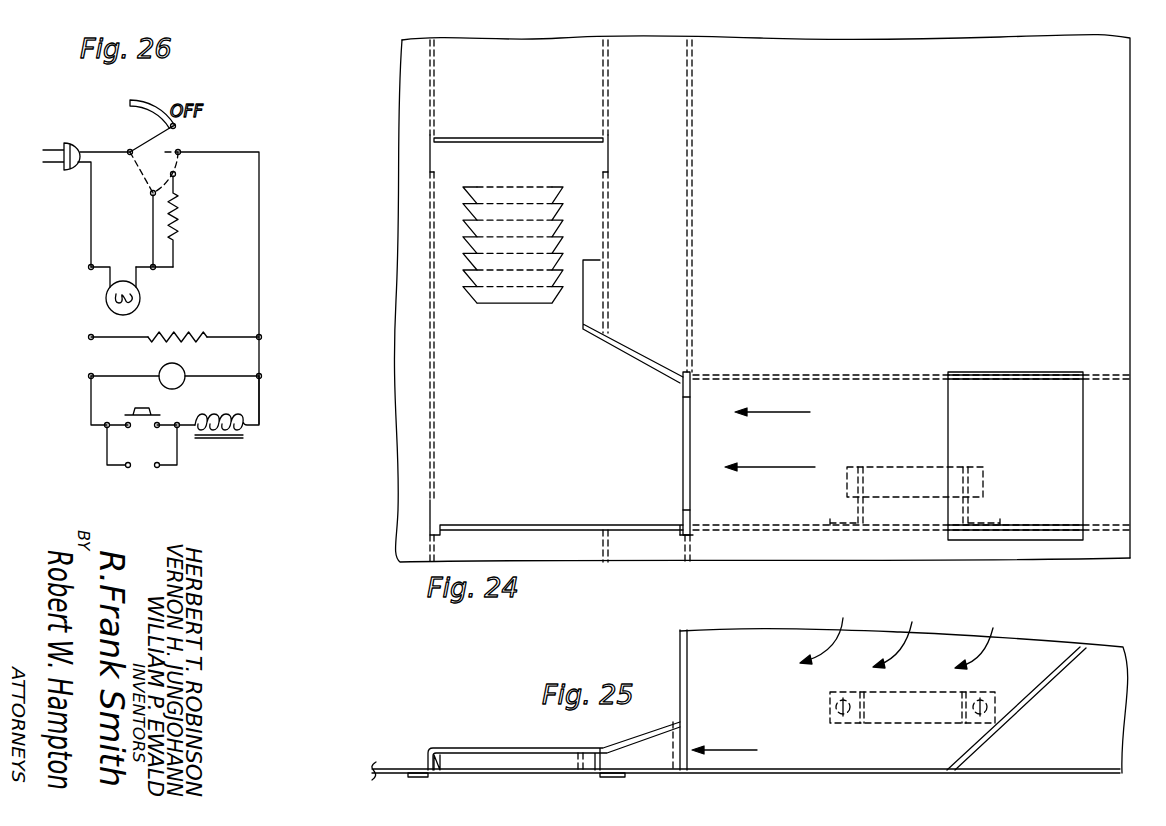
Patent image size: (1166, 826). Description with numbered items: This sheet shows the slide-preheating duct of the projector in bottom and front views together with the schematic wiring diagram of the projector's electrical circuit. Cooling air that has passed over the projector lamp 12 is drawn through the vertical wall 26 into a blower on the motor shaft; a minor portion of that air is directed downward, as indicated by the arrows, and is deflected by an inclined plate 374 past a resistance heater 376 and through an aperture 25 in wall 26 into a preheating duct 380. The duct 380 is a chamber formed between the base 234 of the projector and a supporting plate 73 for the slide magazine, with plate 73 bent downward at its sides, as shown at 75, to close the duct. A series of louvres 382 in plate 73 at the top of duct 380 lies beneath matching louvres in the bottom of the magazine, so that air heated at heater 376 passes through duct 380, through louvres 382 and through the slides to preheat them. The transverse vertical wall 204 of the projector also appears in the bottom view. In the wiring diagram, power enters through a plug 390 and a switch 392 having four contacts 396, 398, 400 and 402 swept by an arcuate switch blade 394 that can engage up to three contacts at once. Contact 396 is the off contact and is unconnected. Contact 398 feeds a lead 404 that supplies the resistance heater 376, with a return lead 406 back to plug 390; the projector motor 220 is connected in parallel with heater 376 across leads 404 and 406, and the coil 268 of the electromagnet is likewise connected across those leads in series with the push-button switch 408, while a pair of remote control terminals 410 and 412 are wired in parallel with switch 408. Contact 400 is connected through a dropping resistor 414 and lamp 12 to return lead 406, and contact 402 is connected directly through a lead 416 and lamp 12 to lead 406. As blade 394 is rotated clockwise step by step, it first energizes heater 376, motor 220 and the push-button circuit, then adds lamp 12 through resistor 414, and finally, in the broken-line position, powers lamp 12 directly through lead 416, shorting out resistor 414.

In FIG. 26, the projector lamp 12 is at (141, 295).
In FIG. 24, the aperture 25 is at (683, 432).
In FIG. 25, the aperture 25 is at (688, 742).
In FIG. 24, the vertical wall 26 is at (694, 185).
In FIG. 25, the vertical wall 26 is at (688, 683).
In FIG. 24, the supporting plate 73 is at (427, 520).
In FIG. 25, the supporting plate 73 is at (478, 748).
In FIG. 25, the downward bend 75 is at (427, 762).
In FIG. 24, the transverse vertical wall 204 is at (845, 373).
In FIG. 26, the projector motor 220 is at (193, 358).
In FIG. 24, the base 234 is at (803, 559).
In FIG. 25, the base 234 is at (772, 770).
In FIG. 26, the coil 268 is at (243, 429).
In FIG. 24, the inclined plate 374 is at (948, 418).
In FIG. 25, the inclined plate 374 is at (1048, 677).
In FIG. 26, the resistance heater 376 is at (184, 333).
In FIG. 24, the resistance heater 376 is at (887, 467).
In FIG. 25, the resistance heater 376 is at (892, 713).
In FIG. 25, the preheating duct 380 is at (540, 762).
In FIG. 24, the louvres 382 is at (508, 305).
In FIG. 26, the plug 390 is at (72, 146).
In FIG. 26, the switch 392 is at (146, 196).
In FIG. 26, the arcuate switch blade 394 is at (146, 105).
In FIG. 26, the off contact 396 is at (176, 128).
In FIG. 26, the contact 398 is at (181, 154).
In FIG. 26, the contact 400 is at (176, 176).
In FIG. 26, the contact 402 is at (150, 197).
In FIG. 26, the lead 404 is at (262, 224).
In FIG. 26, the return lead 406 is at (93, 332).
In FIG. 26, the push-button switch 408 is at (142, 410).
In FIG. 26, the remote control terminal 410 is at (128, 468).
In FIG. 26, the remote control terminal 412 is at (158, 468).
In FIG. 26, the dropping resistor 414 is at (180, 222).
In FIG. 26, the lead 416 is at (151, 252).